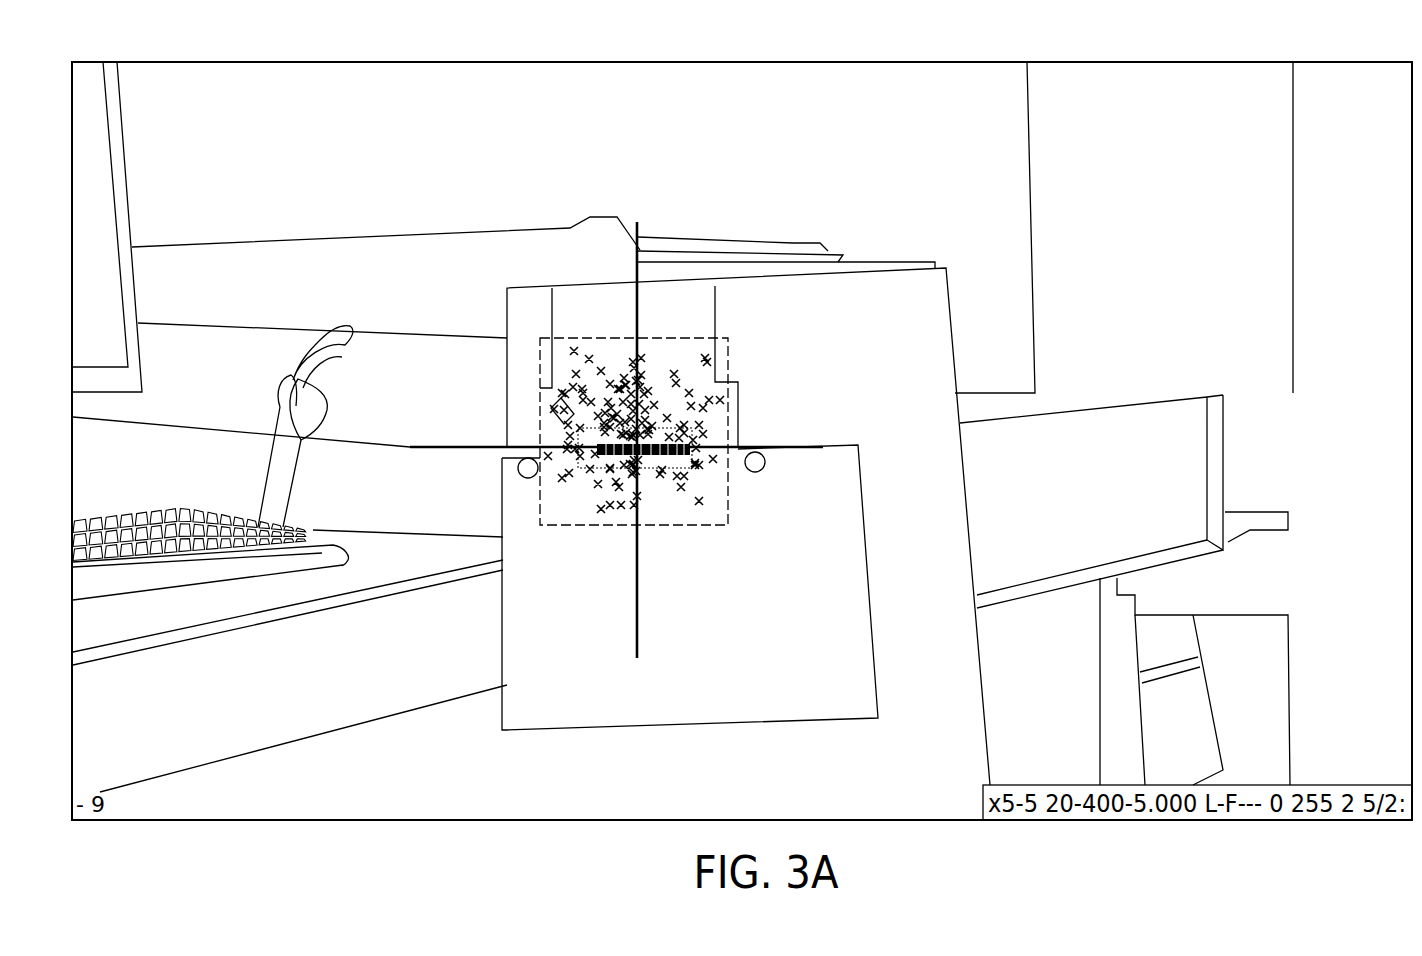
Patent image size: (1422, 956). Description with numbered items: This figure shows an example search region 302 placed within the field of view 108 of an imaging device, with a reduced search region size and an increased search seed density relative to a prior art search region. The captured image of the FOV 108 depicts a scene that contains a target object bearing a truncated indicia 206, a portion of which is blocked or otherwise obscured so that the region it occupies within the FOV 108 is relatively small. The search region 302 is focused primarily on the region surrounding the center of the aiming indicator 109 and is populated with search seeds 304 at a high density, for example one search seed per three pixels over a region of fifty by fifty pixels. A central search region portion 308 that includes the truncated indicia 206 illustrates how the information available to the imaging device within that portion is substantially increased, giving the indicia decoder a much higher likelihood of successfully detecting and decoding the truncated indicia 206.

The field of view 108 is at (740, 62).
The aiming indicator 109 is at (483, 447).
The truncated indicia 206 is at (605, 455).
The search region 302 is at (613, 337).
The search seeds 304 is at (580, 373).
The central search region portion 308 is at (690, 468).